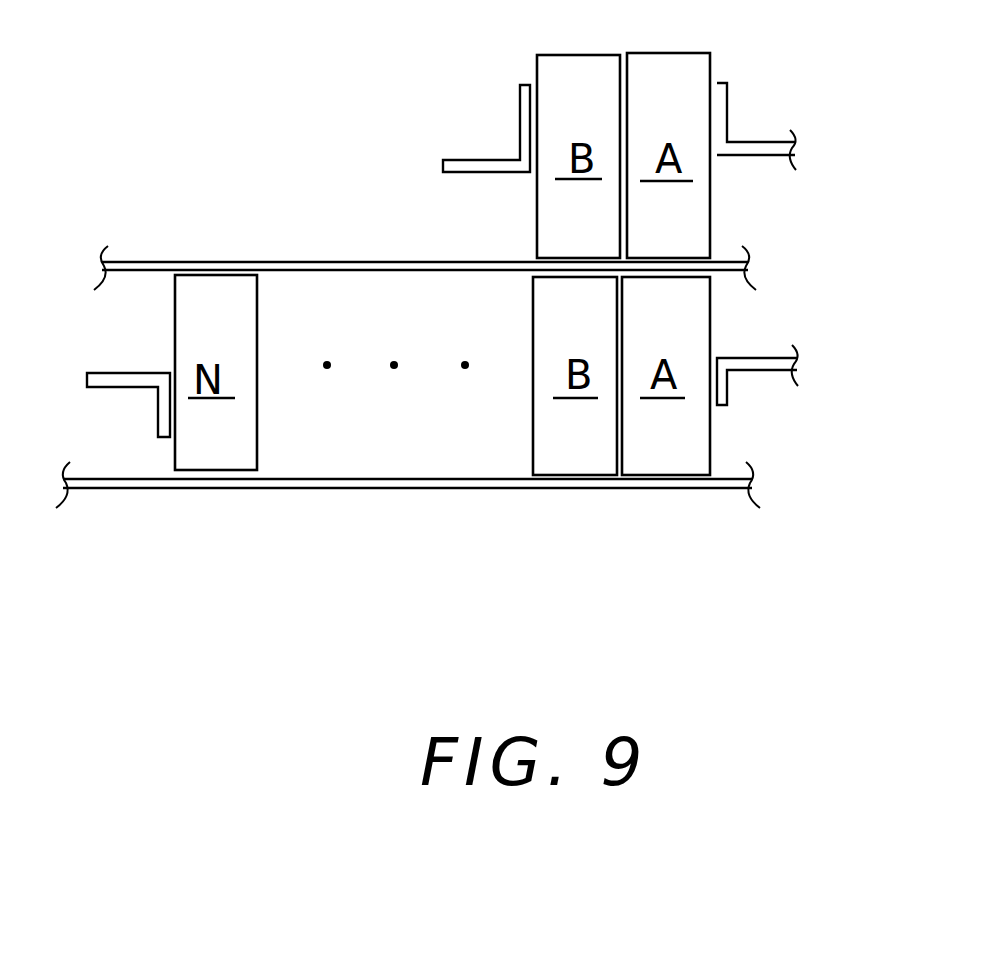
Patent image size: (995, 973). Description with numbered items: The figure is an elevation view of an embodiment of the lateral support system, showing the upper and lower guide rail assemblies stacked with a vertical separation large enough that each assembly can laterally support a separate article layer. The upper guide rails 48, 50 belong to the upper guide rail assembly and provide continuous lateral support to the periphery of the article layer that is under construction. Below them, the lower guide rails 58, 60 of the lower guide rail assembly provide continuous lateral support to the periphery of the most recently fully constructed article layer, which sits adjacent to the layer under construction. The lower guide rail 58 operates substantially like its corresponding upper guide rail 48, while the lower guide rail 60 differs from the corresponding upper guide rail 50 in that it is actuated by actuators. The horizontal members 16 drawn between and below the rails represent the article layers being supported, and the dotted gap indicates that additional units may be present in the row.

The conductor rails 16 is at (725, 262).
The upper guide rail 48 is at (763, 140).
The upper guide rail 50 is at (483, 157).
The lower guide rail 58 is at (770, 358).
The lower guide rail 60 is at (127, 372).